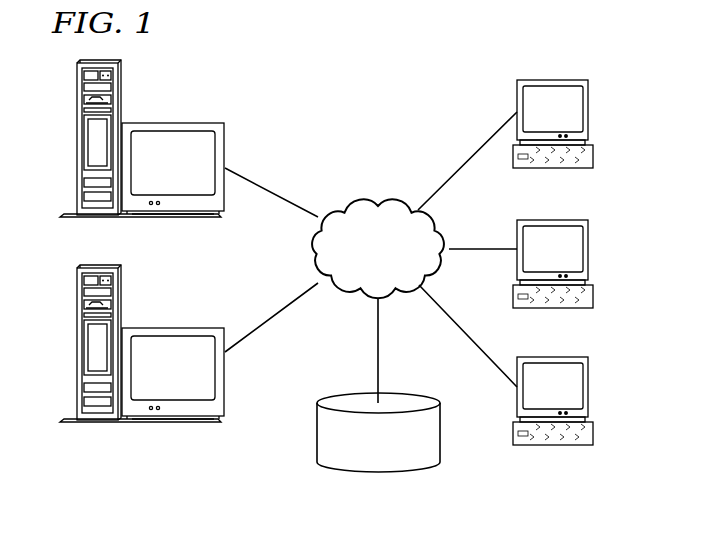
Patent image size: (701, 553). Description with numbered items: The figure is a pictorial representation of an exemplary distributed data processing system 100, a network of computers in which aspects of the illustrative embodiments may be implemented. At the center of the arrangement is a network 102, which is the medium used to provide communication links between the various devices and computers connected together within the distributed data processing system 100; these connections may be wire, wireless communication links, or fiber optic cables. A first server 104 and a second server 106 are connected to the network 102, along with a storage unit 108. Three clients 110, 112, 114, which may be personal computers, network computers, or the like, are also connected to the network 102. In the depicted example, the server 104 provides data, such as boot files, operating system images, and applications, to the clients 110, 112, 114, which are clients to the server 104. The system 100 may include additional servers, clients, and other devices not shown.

The distributed data processing system 100 is at (432, 86).
The network 102 is at (350, 199).
The server 104 is at (77, 138).
The server 106 is at (77, 348).
The storage unit 108 is at (361, 478).
The client 110 is at (589, 110).
The client 112 is at (589, 250).
The client 114 is at (589, 385).